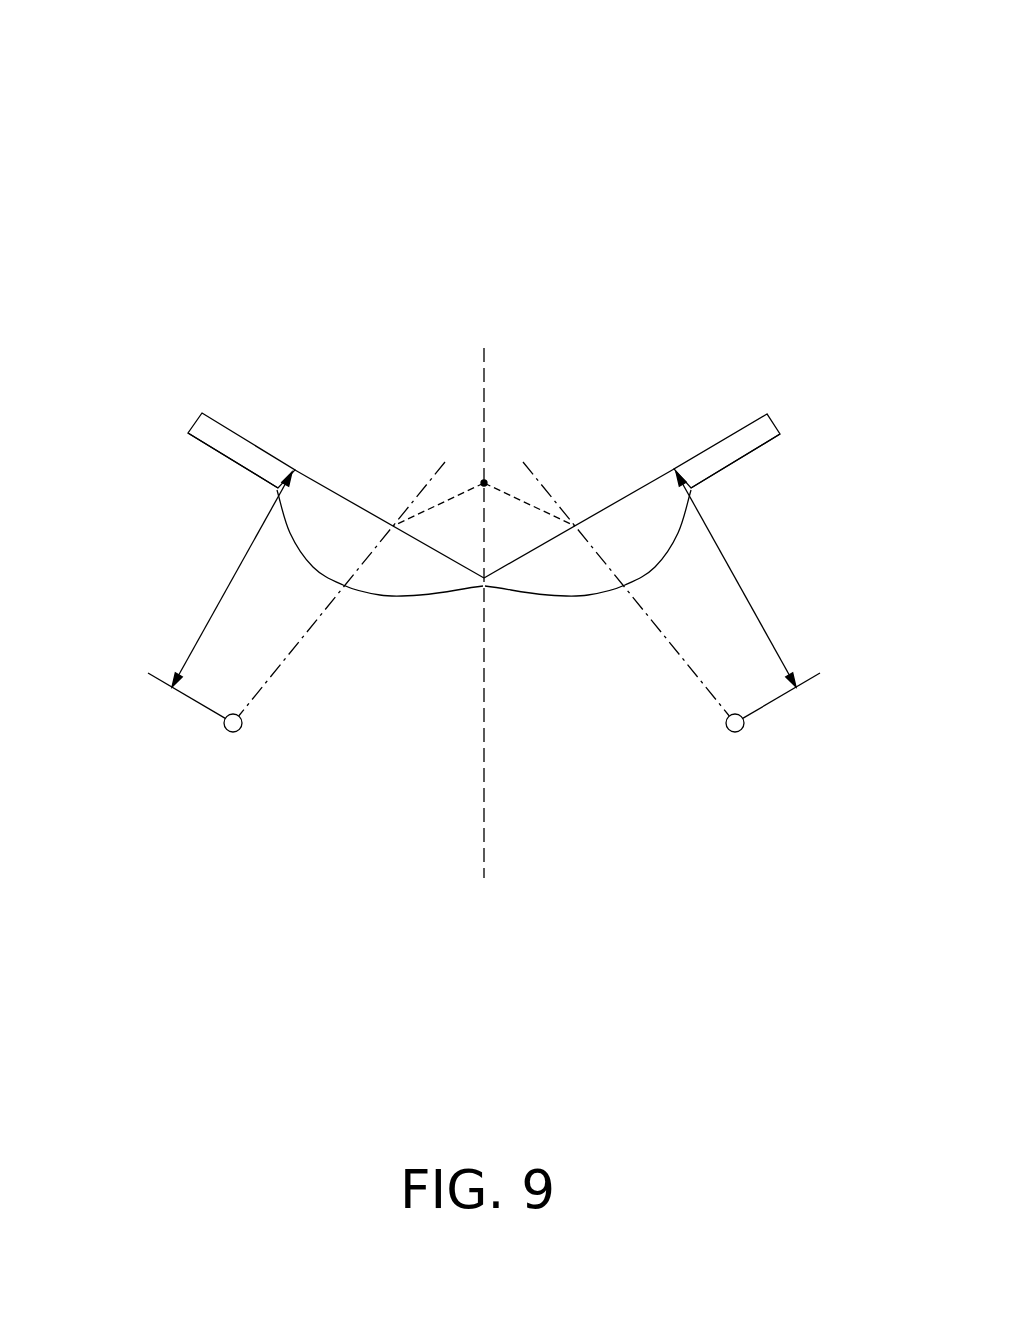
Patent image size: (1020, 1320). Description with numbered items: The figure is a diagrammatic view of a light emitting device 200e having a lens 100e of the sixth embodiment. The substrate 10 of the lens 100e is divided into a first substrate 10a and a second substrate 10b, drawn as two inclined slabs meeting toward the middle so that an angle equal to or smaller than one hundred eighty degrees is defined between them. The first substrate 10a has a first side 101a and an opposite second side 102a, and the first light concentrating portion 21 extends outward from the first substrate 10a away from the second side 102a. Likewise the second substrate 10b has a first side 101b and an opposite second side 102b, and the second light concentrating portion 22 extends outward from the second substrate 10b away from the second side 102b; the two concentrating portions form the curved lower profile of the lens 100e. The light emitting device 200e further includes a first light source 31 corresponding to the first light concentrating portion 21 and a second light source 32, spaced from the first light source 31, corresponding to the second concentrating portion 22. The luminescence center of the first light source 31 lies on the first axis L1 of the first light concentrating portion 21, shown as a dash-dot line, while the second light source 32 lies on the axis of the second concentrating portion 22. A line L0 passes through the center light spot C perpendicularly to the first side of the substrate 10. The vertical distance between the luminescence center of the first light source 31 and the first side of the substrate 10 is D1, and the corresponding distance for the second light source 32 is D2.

The light emitting device 200e is at (485, 351).
The substrate 10 is at (837, 288).
The first substrate 10a is at (243, 335).
The second substrate 10b is at (870, 327).
The first side of the first substrate 101a is at (253, 443).
The second side of the first substrate 102a is at (213, 451).
The first side of the second substrate 101b is at (715, 443).
The second side of the second substrate 102b is at (755, 452).
The lens 100e is at (678, 454).
The first light concentrating portion 21 is at (380, 597).
The second light concentrating portion 22 is at (545, 593).
The first light source 31 is at (233, 732).
The second light source 32 is at (738, 732).
The line L0 is at (460, 613).
The first axis L1 is at (484, 587).
The center light spot C is at (484, 491).
The vertical distance D1 is at (219, 595).
The vertical distance D2 is at (749, 595).